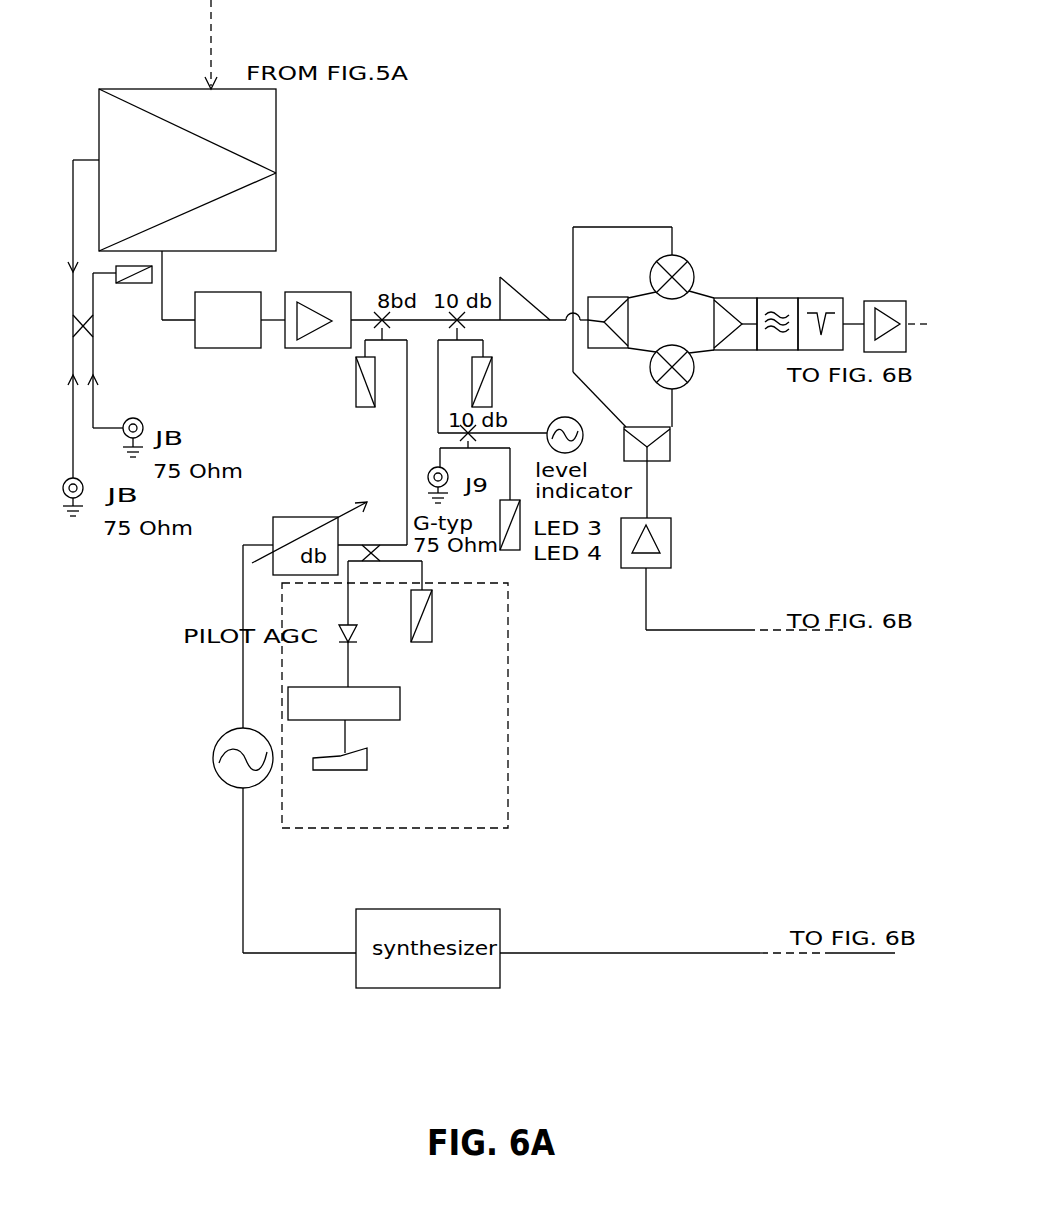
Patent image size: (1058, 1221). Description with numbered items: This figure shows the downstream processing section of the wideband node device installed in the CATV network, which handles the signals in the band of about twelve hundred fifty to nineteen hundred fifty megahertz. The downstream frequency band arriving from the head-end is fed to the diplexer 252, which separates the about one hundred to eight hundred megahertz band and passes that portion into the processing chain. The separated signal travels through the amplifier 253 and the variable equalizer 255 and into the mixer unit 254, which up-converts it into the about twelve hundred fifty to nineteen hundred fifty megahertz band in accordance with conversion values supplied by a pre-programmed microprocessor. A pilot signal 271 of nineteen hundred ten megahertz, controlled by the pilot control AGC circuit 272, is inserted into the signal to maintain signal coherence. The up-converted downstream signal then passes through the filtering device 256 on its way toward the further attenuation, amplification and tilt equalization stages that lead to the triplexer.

The diplexer 252 is at (276, 131).
The amplifier 253 is at (318, 292).
The mixer unit 254 is at (228, 292).
The variable equalizer 255 is at (510, 284).
The filtering device 256 is at (807, 298).
The pilot signal of 1910 MHz 271 is at (217, 745).
The pilot control AGC circuit 272 is at (508, 691).